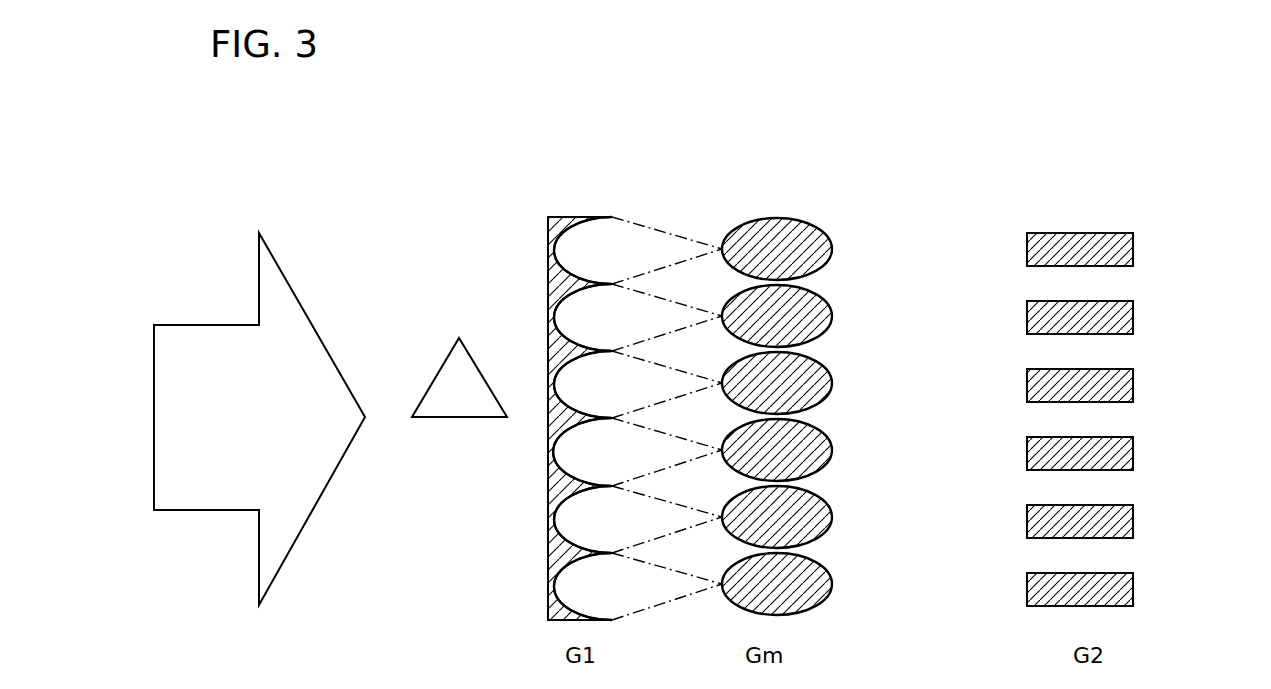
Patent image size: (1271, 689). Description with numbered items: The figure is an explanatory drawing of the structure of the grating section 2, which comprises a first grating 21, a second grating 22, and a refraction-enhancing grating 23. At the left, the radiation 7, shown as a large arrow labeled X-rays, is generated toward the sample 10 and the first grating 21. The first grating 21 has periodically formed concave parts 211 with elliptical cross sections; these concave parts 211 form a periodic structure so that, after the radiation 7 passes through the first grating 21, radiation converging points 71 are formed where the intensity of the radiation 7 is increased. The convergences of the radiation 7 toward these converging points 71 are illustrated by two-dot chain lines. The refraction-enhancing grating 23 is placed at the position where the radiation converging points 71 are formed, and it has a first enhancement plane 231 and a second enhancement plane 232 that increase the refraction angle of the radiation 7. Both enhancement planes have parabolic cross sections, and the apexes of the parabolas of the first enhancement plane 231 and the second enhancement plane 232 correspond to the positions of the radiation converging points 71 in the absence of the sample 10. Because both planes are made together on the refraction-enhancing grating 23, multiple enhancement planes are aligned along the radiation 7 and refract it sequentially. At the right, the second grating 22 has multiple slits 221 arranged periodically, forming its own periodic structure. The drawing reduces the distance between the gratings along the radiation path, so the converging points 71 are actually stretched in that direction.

The radiation 7 is at (186, 323).
The sample 10 is at (441, 368).
The grating section 2 is at (551, 189).
The G1 grating 21 is at (578, 216).
The concave parts 211 is at (568, 260).
The radiation converging points 71 is at (722, 249).
The refraction-enhancing grating 23 is at (790, 198).
The first enhancement plane 231 is at (748, 222).
The second enhancement plane 232 is at (822, 230).
The G2 grating 22 is at (1118, 214).
The slits 221 is at (1125, 285).